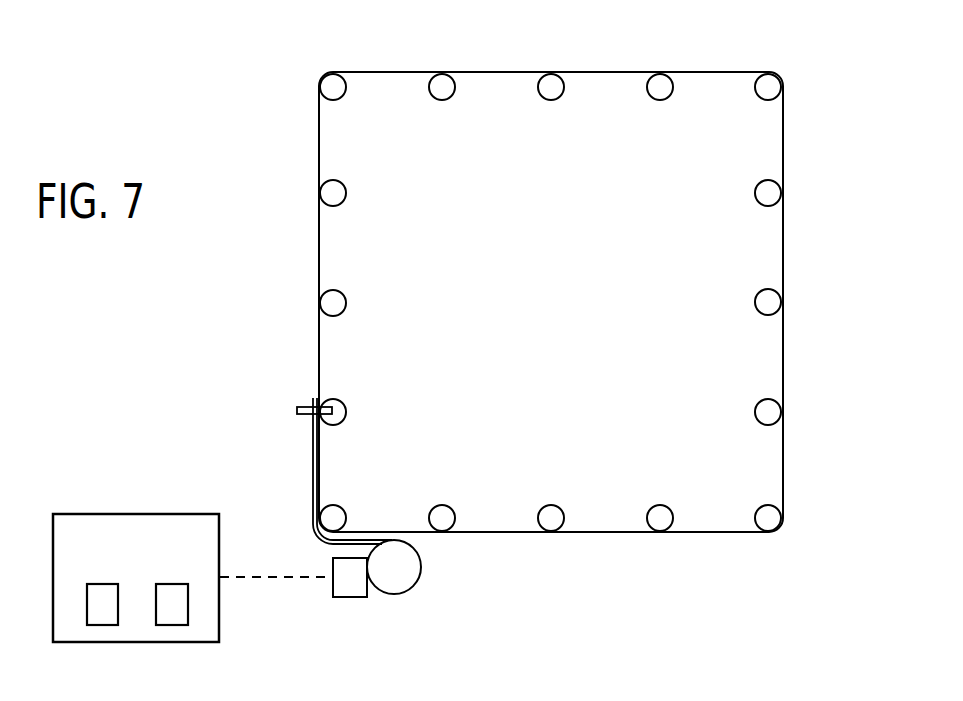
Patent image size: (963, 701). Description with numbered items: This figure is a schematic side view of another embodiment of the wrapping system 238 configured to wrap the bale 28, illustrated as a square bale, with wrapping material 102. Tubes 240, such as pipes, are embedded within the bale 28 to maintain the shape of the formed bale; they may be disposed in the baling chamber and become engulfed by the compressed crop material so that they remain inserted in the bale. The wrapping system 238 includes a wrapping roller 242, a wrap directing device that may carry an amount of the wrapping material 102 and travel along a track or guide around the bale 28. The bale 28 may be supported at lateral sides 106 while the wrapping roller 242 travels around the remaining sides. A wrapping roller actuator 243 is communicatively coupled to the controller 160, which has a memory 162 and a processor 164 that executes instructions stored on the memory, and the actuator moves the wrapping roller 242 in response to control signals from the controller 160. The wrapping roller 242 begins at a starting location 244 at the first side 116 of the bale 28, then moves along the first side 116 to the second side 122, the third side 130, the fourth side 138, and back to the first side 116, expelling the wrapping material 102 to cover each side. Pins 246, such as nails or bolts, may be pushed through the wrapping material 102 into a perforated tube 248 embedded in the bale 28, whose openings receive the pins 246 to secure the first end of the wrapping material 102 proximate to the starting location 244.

The bale 28 is at (483, 526).
The wrapping material 102 is at (314, 506).
The lateral sides 106 is at (582, 428).
The first side 116 is at (205, 447).
The second side 122 is at (603, 581).
The third side 130 is at (836, 282).
The fourth side 138 is at (566, 52).
The controller 160 is at (121, 599).
The memory 162 is at (100, 626).
The processor 164 is at (172, 626).
The wrapping system 238 is at (796, 58).
The tubes 240 is at (445, 90).
The wrapping roller 242 is at (392, 594).
The wrapping roller actuator 243 is at (350, 598).
The starting location 244 is at (313, 448).
The pins 246 is at (305, 408).
The perforated tube 248 is at (337, 405).